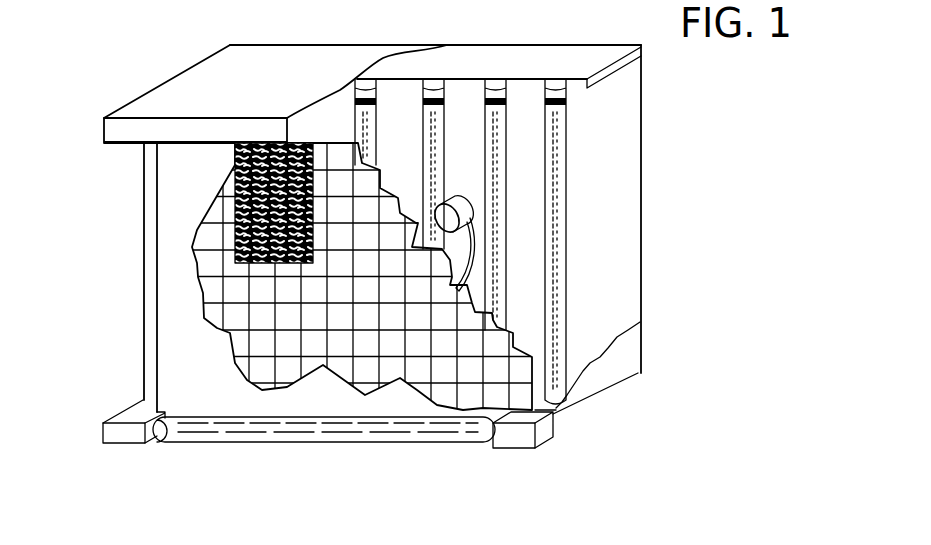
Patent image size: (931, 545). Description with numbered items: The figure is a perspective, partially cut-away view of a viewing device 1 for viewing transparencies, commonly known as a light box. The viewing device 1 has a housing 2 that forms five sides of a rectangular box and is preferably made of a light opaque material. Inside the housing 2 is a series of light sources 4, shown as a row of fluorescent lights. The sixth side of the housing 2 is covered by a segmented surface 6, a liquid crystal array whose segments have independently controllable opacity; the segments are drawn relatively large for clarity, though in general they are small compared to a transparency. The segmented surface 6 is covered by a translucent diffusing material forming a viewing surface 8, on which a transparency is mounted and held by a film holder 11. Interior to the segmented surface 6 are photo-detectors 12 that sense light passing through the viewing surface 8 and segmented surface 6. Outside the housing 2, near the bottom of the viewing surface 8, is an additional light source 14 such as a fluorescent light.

The viewing device 1 is at (104, 265).
The housing 2 is at (328, 57).
The light sources 4 is at (375, 92).
The segmented surface 6 is at (197, 230).
The viewing surface 8 is at (147, 318).
The film holder 11 is at (303, 137).
The photo-detectors 12 is at (612, 408).
The additional light source 14 is at (237, 442).